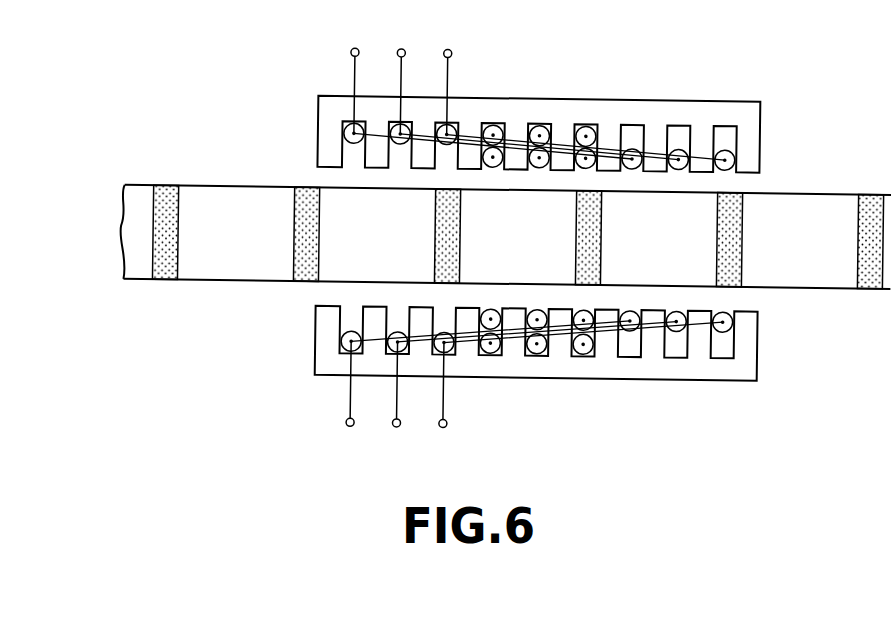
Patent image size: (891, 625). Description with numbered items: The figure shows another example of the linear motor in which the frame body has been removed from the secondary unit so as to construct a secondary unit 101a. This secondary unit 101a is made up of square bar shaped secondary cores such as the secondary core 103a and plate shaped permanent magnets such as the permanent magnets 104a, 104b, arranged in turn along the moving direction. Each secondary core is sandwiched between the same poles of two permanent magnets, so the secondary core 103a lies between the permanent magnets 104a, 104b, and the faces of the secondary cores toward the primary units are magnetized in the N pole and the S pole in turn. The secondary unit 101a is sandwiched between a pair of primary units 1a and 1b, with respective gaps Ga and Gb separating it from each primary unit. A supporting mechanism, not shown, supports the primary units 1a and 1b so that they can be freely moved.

The primary unit 1a is at (330, 88).
The primary unit 1b is at (335, 382).
The secondary unit 101a is at (505, 253).
The secondary core 103a is at (206, 206).
The permanent magnet 104a is at (170, 204).
The permanent magnet 104b is at (309, 200).
The gap Ga is at (750, 183).
The gap Gb is at (745, 298).